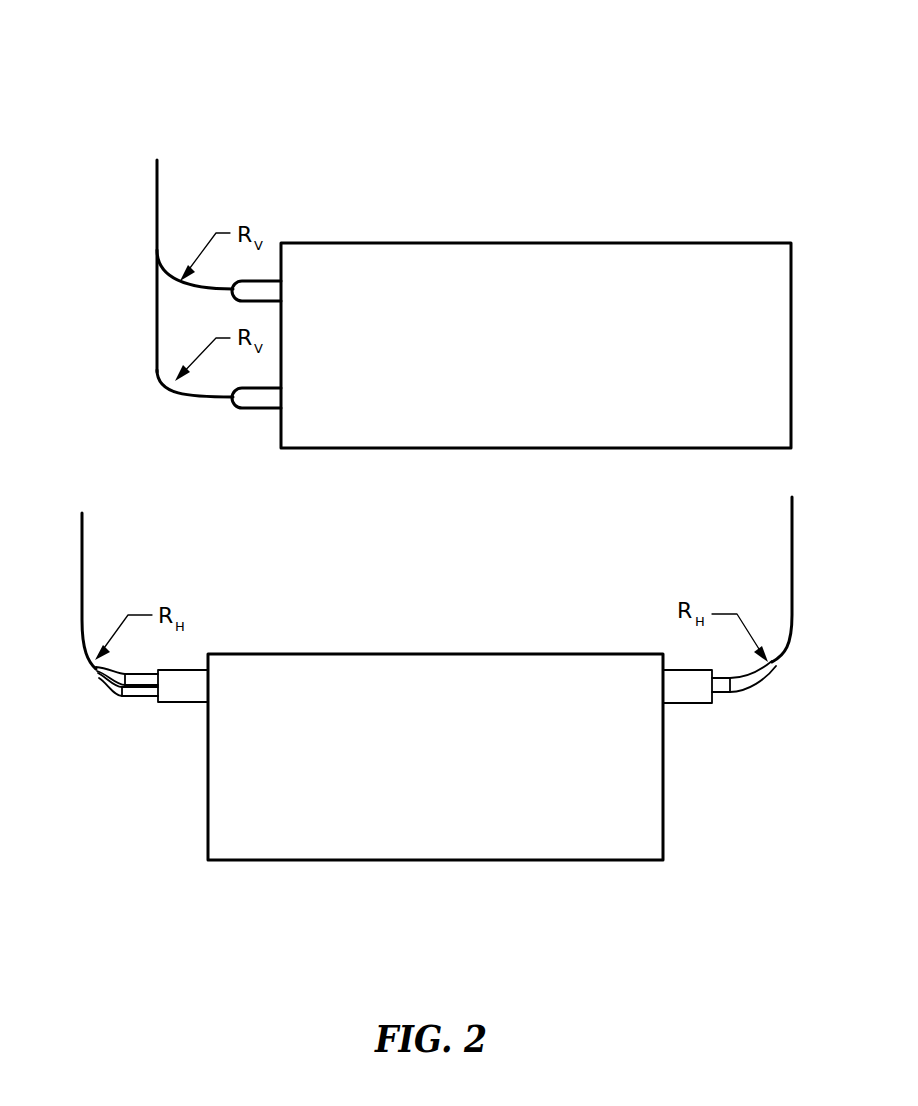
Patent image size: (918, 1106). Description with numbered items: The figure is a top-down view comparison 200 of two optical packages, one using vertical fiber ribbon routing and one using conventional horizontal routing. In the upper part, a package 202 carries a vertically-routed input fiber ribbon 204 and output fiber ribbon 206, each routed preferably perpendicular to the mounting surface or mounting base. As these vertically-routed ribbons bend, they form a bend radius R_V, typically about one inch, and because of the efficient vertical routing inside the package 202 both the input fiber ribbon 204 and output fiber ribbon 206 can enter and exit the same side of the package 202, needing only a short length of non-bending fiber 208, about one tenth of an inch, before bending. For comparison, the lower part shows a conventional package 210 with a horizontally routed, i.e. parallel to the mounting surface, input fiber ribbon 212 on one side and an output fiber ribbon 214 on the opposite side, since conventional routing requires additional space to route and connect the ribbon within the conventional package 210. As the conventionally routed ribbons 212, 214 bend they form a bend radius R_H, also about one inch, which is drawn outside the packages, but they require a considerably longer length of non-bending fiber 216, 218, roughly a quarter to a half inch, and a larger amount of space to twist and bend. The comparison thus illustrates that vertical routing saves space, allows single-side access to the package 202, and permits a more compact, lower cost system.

The top-down view comparison 200 is at (378, 108).
The package 202 is at (649, 243).
The input fiber ribbon 204 is at (184, 394).
The output fiber ribbon 206 is at (184, 288).
The length of non-bending fiber 208 is at (213, 401).
The conventional package 210 is at (498, 654).
The input fiber ribbon 212 is at (775, 658).
The output fiber ribbon 214 is at (95, 670).
The length of non-bending fiber 216 is at (731, 693).
The length of non-bending fiber 218 is at (111, 691).